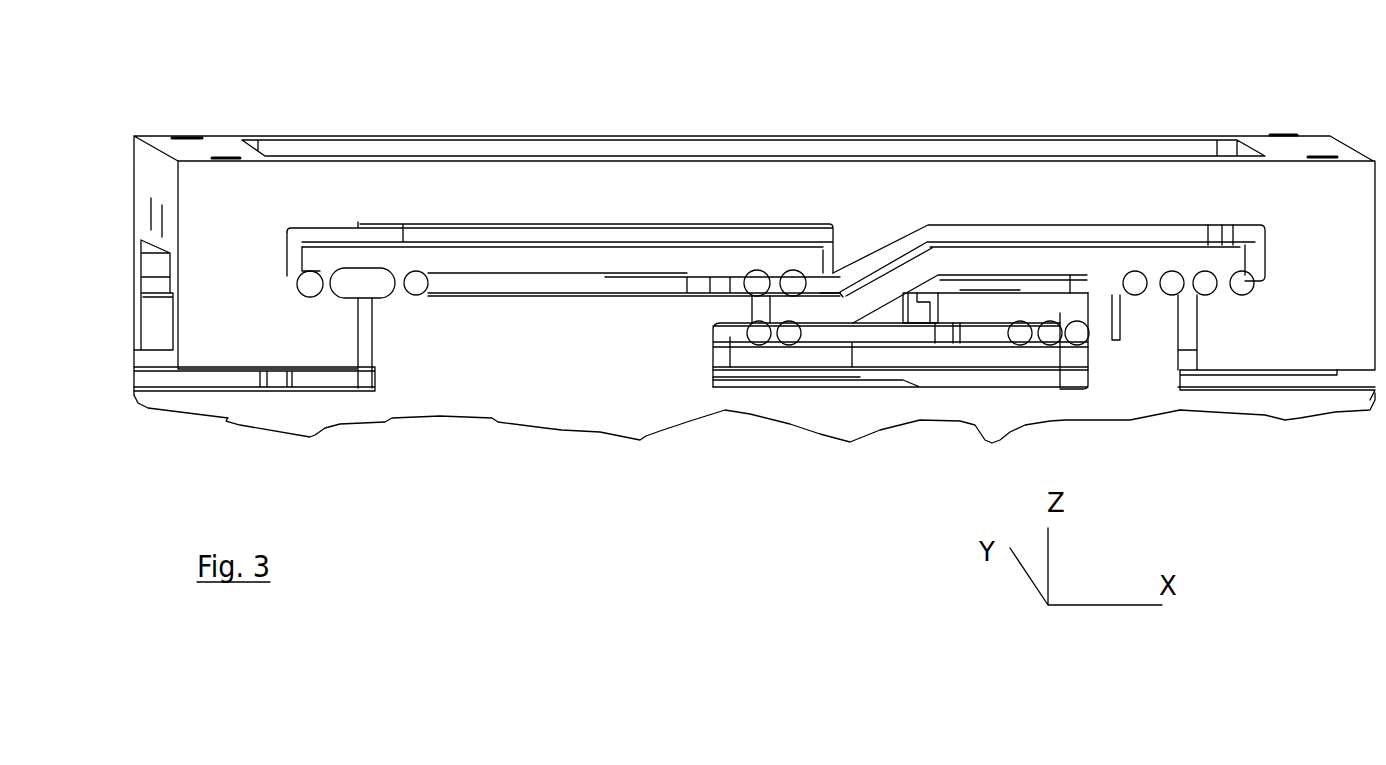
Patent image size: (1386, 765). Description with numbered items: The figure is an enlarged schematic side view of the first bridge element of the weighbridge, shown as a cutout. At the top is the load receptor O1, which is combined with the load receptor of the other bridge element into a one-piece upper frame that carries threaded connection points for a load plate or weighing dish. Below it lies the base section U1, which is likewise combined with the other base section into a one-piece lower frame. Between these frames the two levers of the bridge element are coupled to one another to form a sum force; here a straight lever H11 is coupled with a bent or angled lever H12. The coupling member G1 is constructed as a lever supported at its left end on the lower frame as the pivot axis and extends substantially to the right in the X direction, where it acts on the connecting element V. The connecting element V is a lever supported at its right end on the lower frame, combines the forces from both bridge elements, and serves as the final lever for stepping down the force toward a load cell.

The load receptor O1 is at (243, 239).
The base section U1 is at (562, 385).
The lever H11 is at (520, 260).
The lever H12 is at (1092, 263).
The connecting element V is at (1038, 307).
The coupling member G1 is at (777, 353).